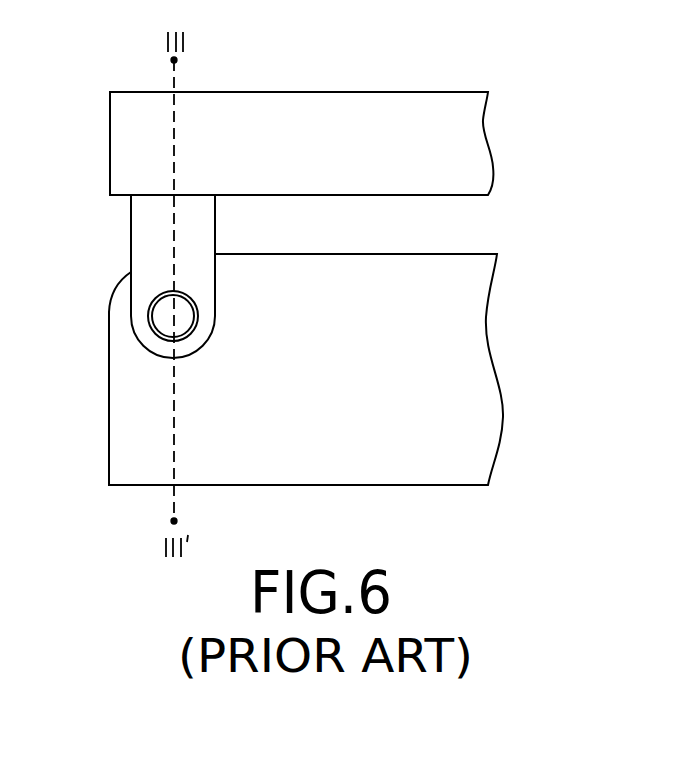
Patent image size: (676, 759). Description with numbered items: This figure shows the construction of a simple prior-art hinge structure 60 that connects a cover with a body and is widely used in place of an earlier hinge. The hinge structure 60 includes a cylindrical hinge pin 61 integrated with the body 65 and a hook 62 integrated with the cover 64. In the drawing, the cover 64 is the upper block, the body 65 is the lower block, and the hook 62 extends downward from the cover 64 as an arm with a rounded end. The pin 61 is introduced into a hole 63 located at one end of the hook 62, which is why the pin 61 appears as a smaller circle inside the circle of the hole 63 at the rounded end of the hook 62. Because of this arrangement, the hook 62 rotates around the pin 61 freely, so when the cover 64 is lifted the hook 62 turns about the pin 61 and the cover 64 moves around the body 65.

The hinge structure 60 is at (603, 142).
The hinge pin 61 is at (160, 318).
The hook 62 is at (145, 229).
The hole 63 is at (149, 304).
The cover 64 is at (342, 107).
The body 65 is at (465, 299).